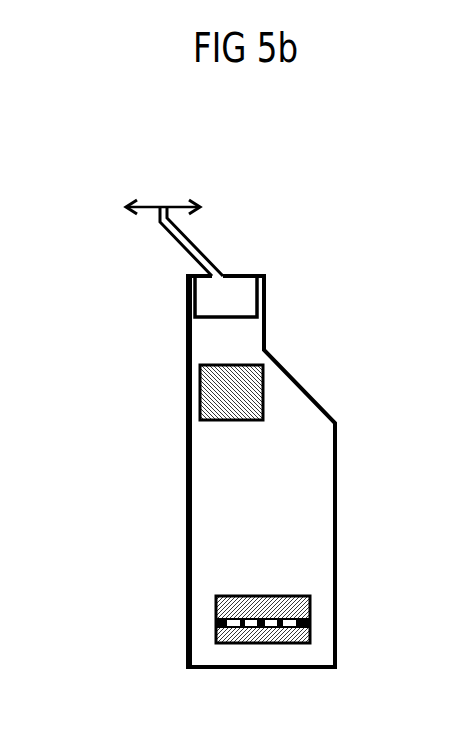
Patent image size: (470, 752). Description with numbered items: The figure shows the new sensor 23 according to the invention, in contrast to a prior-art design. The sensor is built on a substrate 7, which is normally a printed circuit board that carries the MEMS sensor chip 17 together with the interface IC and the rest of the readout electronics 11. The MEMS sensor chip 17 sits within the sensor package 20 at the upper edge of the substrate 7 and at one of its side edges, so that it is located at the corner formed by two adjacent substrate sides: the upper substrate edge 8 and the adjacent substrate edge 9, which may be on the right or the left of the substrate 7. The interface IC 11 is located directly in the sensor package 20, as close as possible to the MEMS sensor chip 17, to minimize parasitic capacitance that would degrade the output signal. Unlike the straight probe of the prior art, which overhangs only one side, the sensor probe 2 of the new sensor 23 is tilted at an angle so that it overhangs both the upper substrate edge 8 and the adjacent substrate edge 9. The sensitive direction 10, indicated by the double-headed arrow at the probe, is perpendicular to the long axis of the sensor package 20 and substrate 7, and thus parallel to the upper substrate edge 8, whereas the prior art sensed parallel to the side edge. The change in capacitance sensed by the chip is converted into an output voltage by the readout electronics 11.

The sensor probe 2 is at (185, 252).
The substrate 7 is at (233, 512).
The upper substrate edge 8 is at (252, 274).
The adjacent substrate edge 9 is at (190, 427).
The sensitive direction 10 is at (155, 204).
The interface IC 11 is at (228, 383).
The MEMS sensor chip 17 is at (372, 197).
The sensor package 20 is at (372, 275).
The new sensor 23 is at (86, 161).